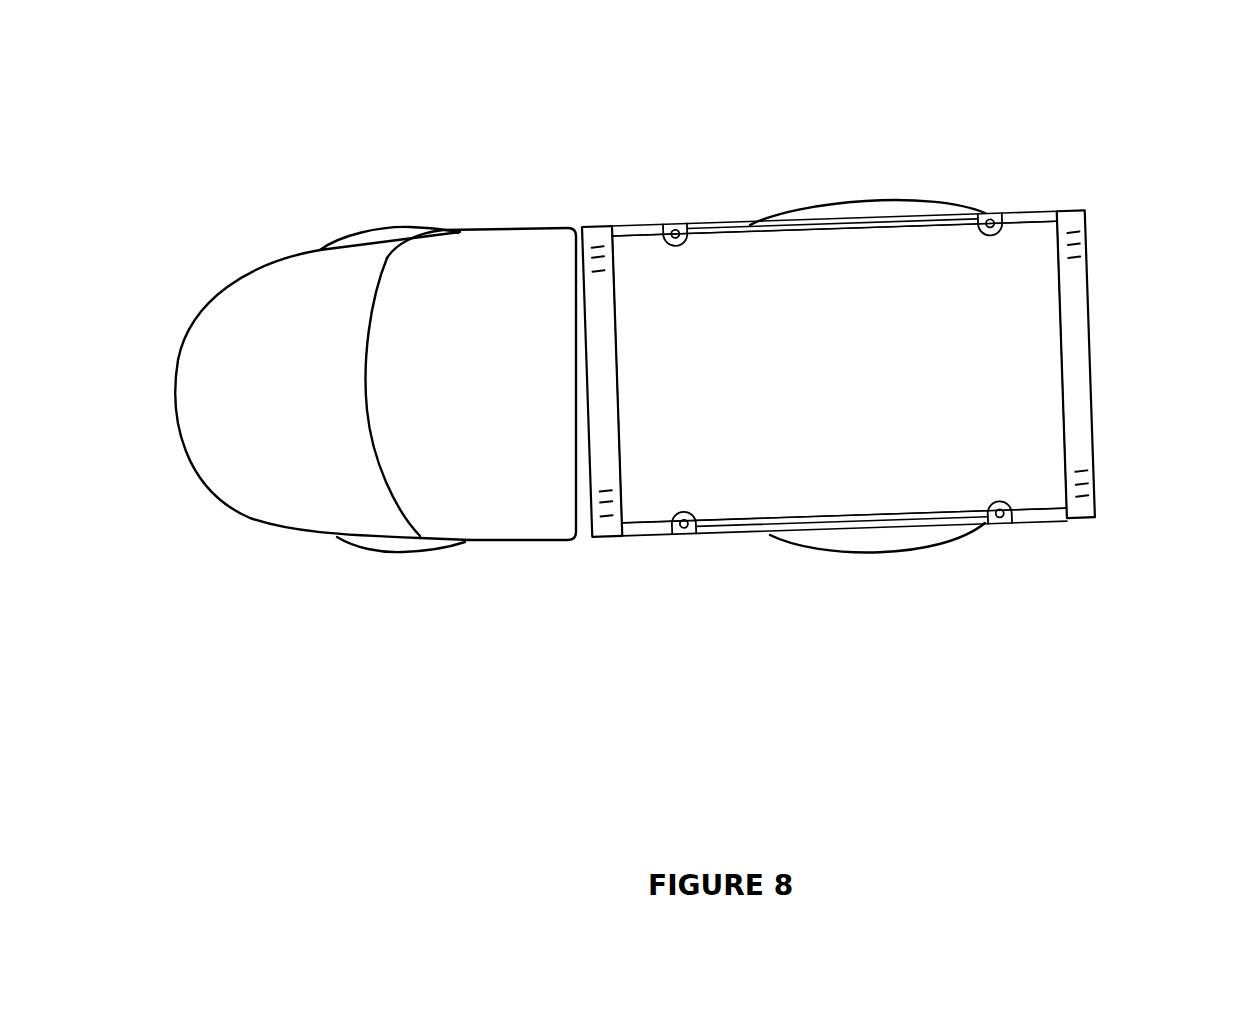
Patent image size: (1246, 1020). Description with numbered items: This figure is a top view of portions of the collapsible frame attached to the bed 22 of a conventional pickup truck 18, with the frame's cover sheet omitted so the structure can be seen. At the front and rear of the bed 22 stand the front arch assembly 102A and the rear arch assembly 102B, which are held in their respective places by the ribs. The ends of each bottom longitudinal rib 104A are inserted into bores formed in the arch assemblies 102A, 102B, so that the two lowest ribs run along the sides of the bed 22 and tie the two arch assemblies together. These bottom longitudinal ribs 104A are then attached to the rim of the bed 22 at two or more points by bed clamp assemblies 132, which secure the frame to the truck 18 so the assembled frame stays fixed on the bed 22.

The pickup truck 18 is at (258, 534).
The bed 22 is at (812, 292).
The front arch assembly 102A is at (558, 450).
The rear arch assembly 102B is at (1142, 358).
The rib 104A is at (901, 365).
The bed clamp assembly 132 is at (842, 468).